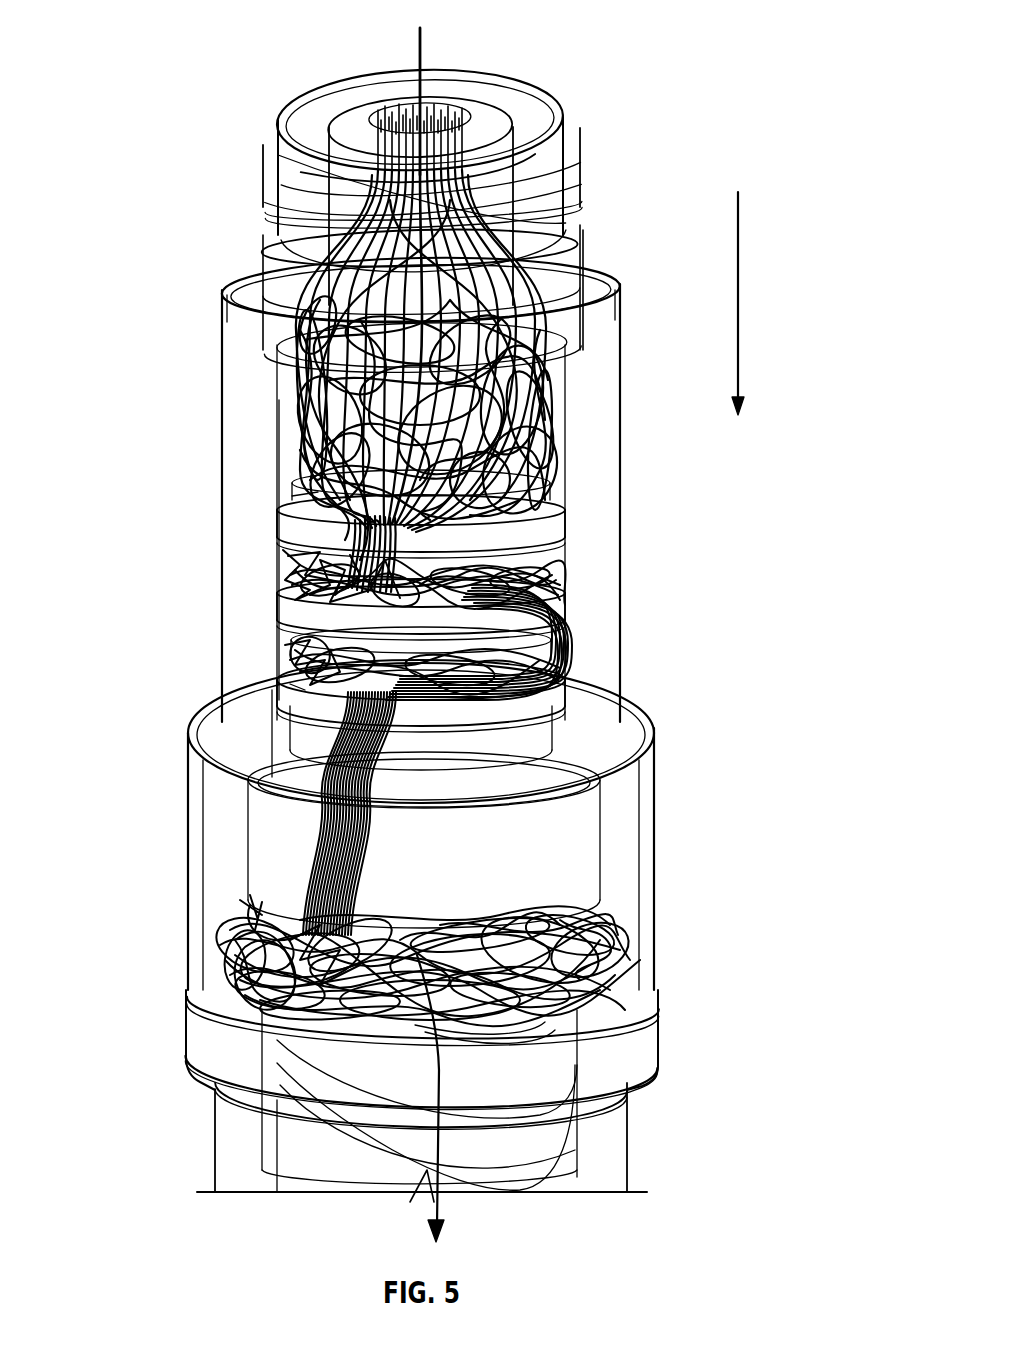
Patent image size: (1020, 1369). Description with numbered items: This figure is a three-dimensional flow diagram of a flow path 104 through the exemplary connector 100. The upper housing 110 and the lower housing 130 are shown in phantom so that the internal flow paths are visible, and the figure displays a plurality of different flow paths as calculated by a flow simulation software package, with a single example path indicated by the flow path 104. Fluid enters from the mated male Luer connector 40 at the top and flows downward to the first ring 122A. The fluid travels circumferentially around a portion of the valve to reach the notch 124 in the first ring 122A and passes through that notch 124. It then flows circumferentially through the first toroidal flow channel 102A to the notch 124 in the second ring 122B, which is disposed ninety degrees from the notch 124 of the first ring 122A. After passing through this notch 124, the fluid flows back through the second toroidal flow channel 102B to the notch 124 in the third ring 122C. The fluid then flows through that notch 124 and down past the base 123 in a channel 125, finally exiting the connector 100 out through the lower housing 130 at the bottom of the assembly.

The connector 100 is at (312, 67).
The flow path 104 is at (420, 54).
The male Luer connector 40 is at (353, 195).
The upper housing 110 is at (258, 375).
The first ring 122A is at (557, 528).
The first toroidal flow channel 102A is at (550, 587).
The second ring 122B is at (563, 603).
The second toroidal flow channel 102B is at (563, 650).
The third ring 122C is at (565, 690).
The notch 124 is at (318, 492).
The base 123 is at (272, 847).
The channel 125 is at (352, 882).
The lower housing 130 is at (232, 1132).